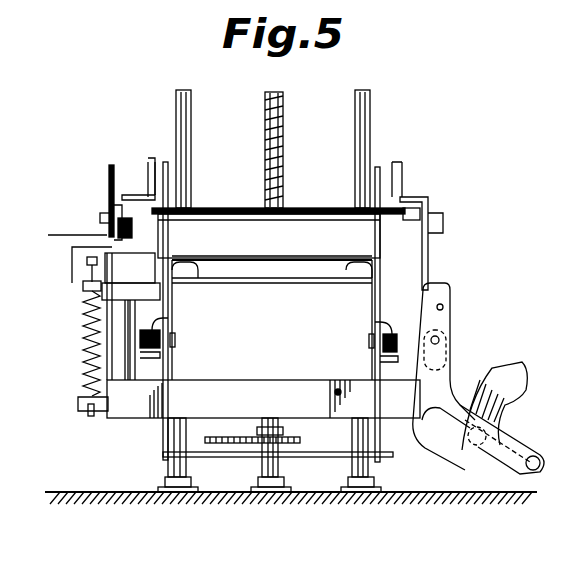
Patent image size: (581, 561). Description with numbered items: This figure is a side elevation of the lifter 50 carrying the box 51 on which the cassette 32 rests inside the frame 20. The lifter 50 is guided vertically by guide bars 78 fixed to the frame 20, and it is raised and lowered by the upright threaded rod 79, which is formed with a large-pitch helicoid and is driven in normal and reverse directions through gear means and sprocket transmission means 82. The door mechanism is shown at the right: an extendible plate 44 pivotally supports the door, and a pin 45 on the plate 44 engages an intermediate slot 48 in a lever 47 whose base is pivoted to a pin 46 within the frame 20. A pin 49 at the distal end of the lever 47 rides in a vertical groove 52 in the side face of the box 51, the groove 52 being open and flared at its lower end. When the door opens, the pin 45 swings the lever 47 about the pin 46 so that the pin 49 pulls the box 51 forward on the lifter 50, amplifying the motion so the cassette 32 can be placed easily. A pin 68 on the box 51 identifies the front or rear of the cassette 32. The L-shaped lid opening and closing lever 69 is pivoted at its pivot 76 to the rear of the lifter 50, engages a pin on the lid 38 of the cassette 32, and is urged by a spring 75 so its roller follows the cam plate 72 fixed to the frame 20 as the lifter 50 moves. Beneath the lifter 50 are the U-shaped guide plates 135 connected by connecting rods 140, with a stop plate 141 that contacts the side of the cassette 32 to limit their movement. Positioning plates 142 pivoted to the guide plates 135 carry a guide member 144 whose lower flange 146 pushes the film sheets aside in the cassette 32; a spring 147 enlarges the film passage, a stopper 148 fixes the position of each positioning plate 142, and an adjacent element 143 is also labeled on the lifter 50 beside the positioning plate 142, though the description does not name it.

The frame 20 is at (495, 497).
The cassette 32 is at (443, 247).
The lid 38 is at (318, 208).
The extendible plate 44 is at (512, 368).
The pin 45 is at (470, 455).
The pin 46 is at (540, 468).
The lever 47 is at (450, 362).
The slot 48 is at (450, 440).
The pin 49 is at (446, 335).
The lifter 50 is at (130, 408).
The box 51 is at (448, 280).
The vertical groove 52 is at (444, 307).
The pin 68 is at (104, 216).
The lid opening and closing lever 69 is at (86, 268).
The cam plate 72 is at (108, 180).
The spring 75 is at (82, 352).
The pivot 76 is at (84, 290).
The guide bars 78 is at (192, 125).
The threaded rod 79 is at (284, 125).
The sprocket transmission means 82 is at (232, 444).
The guide plates 135 is at (162, 445).
The connecting rods 140 is at (272, 280).
The stop plate 141 is at (175, 283).
The positioning plates 142 is at (135, 195).
The slide block 143 is at (177, 340).
The guide member 144 is at (151, 160).
The flange 146 is at (395, 222).
The spring 147 is at (165, 316).
The stopper 148 is at (162, 357).